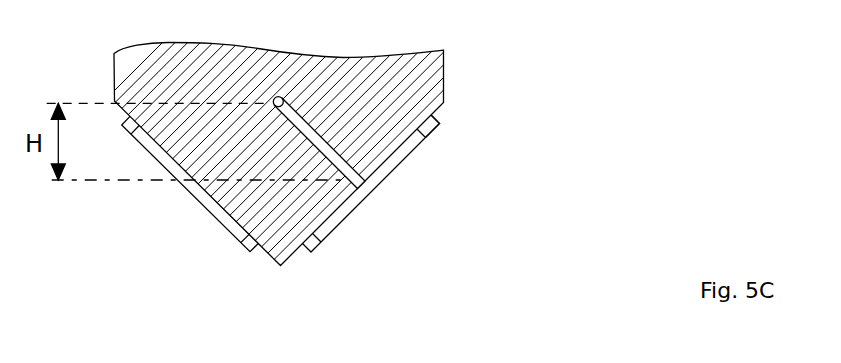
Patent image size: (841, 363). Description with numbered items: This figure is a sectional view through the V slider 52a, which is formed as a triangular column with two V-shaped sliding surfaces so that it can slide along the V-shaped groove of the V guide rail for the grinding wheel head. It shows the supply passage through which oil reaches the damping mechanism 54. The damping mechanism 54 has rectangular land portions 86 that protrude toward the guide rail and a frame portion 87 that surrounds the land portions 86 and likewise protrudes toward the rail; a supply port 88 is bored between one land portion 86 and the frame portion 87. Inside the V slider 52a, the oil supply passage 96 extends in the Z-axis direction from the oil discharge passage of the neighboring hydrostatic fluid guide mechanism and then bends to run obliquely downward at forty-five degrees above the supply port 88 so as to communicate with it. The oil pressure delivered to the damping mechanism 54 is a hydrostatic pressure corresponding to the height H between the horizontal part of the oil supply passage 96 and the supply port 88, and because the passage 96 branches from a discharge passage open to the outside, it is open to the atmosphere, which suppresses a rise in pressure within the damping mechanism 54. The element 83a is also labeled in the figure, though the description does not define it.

The V slider 52a is at (380, 64).
The oil supply passage 96 is at (315, 131).
The frame portion 87 is at (434, 112).
The stop 83a is at (422, 128).
The land portion 86 is at (384, 161).
The supply port 88 is at (360, 182).
The damping mechanism 54 is at (148, 219).